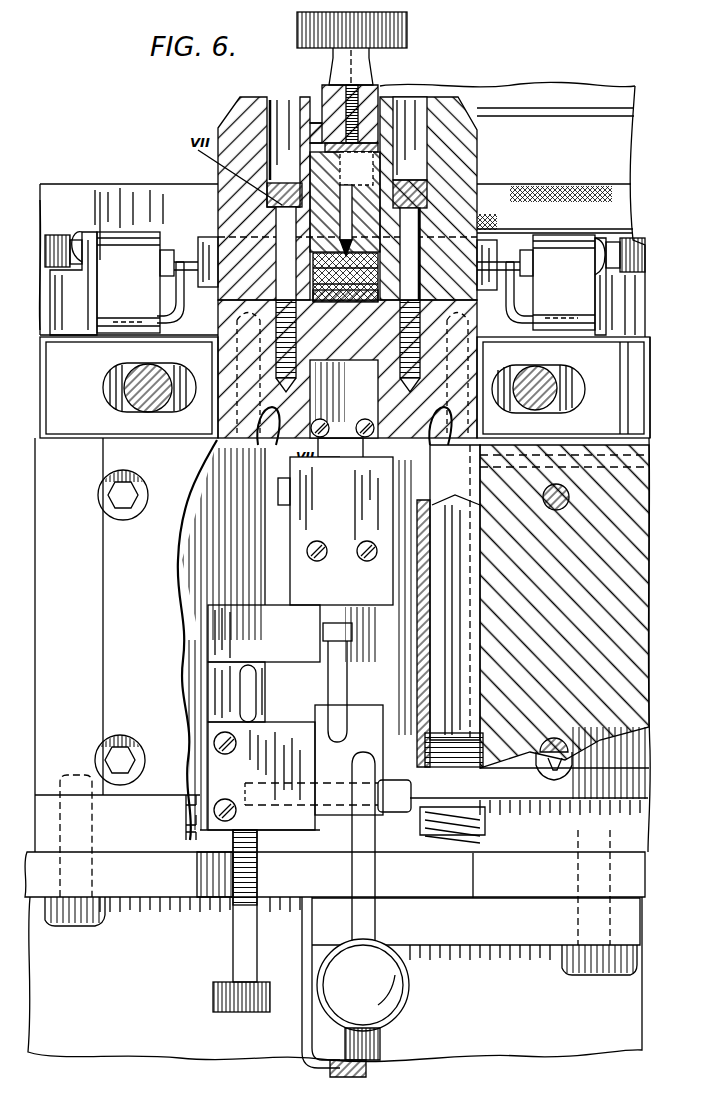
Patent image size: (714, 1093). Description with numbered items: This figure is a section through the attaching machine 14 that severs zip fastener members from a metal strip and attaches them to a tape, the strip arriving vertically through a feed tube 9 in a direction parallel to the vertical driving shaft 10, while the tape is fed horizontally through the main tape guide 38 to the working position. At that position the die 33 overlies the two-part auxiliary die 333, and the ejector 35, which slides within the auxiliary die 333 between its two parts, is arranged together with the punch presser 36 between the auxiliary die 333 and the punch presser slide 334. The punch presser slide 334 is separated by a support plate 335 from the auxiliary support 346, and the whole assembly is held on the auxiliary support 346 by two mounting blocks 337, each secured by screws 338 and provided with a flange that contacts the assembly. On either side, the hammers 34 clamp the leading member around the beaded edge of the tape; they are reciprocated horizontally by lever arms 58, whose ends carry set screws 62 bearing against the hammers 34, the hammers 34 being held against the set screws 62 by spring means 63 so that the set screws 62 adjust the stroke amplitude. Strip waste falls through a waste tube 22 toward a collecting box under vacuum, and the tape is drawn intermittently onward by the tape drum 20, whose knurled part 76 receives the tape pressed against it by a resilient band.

The feed tube 9 is at (290, 1040).
The driving shaft 10 is at (308, 1039).
The attaching machine 14 is at (36, 603).
The tape drum 20 is at (520, 209).
The waste tube 22 is at (185, 818).
The die 33 is at (304, 272).
The hammers 34 is at (190, 262).
The ejector 35 is at (392, 228).
The punch presser 36 is at (470, 250).
The main tape guide 38 is at (412, 134).
The lever arms 58 is at (112, 262).
The set screws 62 is at (64, 257).
The spring means 63 is at (176, 297).
The knurled part 76 is at (612, 208).
The auxiliary die 333 is at (316, 272).
The punch presser slide 334 is at (316, 287).
The support plate 335 is at (378, 296).
The mounting blocks 337 is at (250, 114).
The screws 338 is at (510, 152).
The auxiliary support 346 is at (218, 420).